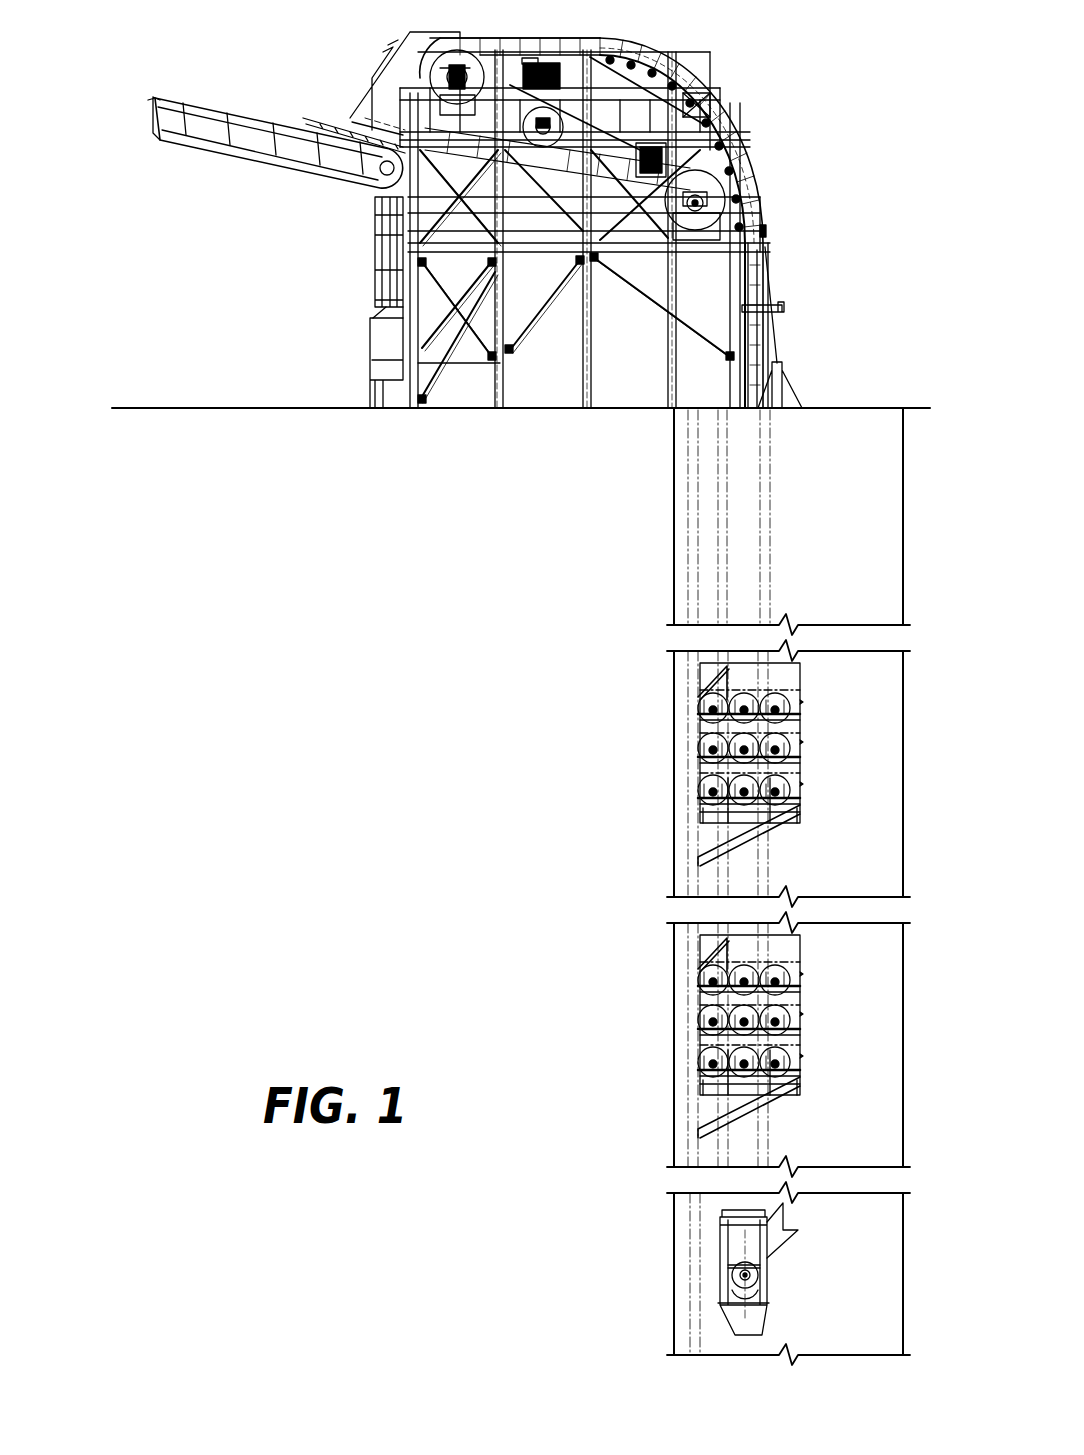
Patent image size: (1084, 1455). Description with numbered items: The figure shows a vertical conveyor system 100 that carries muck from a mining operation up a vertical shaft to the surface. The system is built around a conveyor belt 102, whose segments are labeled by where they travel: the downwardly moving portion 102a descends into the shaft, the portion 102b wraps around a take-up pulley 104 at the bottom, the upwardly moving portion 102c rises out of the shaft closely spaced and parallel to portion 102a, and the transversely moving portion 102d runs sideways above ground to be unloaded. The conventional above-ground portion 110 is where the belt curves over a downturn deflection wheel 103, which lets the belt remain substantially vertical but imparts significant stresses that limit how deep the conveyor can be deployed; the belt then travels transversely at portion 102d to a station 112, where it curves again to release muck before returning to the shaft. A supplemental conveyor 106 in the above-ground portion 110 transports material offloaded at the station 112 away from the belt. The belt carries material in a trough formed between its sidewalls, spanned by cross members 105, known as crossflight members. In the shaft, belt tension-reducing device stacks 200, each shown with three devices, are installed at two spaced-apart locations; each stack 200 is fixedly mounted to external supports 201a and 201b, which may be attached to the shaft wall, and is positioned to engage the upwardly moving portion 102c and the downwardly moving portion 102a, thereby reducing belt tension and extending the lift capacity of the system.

The vertical conveyor system 100 is at (772, 80).
The conveyor belt 102 is at (765, 228).
The downwardly moving portion of the conveyor belt 102a is at (740, 510).
The portion of the conveyor belt traveling around the take-up pulley 102b is at (736, 1295).
The upwardly moving portion of the conveyor belt 102c is at (770, 508).
The transversely moving portion of the conveyor belt 102d is at (532, 40).
The downturn deflection wheel 103 is at (759, 168).
The take-up pulley 104 is at (740, 1276).
The cross member 105 is at (756, 285).
The supplemental conveyor 106 is at (250, 163).
The above-ground portion 110 is at (113, 44).
The station 112 is at (373, 72).
The belt tension-reducing device stack 200 is at (673, 770).
The external support 201a is at (698, 670).
The external support 201b is at (706, 858).